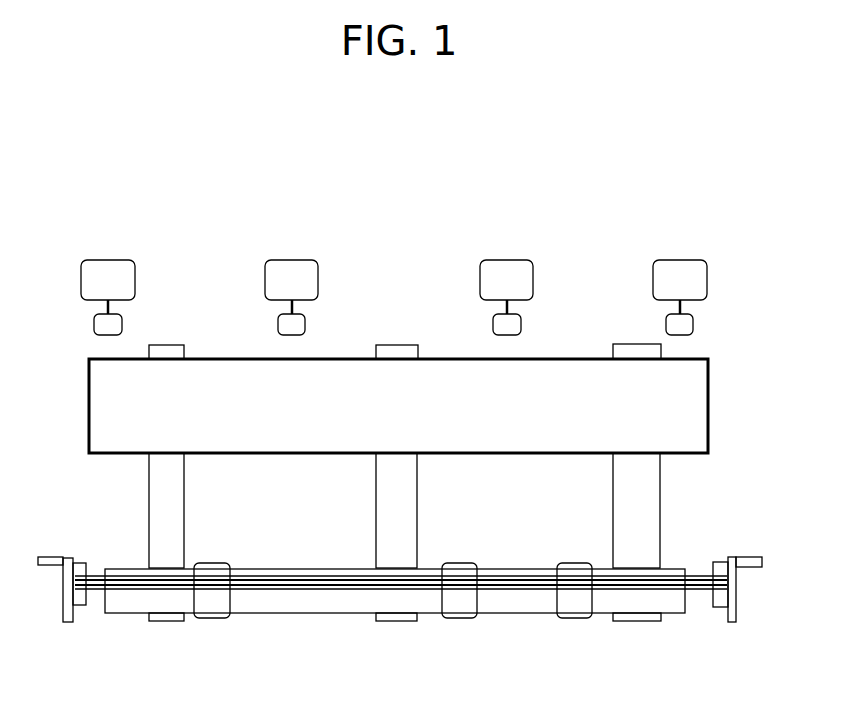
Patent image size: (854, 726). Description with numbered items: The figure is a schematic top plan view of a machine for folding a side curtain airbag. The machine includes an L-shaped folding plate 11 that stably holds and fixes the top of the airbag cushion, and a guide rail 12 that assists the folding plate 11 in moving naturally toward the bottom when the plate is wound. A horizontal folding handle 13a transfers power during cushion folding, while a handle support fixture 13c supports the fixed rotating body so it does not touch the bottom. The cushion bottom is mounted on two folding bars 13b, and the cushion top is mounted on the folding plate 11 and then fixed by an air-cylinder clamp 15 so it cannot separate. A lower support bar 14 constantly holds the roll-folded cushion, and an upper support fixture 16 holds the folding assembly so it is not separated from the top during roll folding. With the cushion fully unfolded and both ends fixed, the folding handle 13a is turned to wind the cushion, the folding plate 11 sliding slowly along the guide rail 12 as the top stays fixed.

The L-shaped folding plate 11 is at (710, 405).
The guide rail 12 is at (653, 503).
The folding handle 13a is at (750, 567).
The folding bar 13b is at (277, 590).
The handle support fixture 13c is at (79, 558).
The lower support bar 14 is at (638, 603).
The air-cylinder clamp 15 is at (107, 258).
The upper support fixture 16 is at (457, 600).